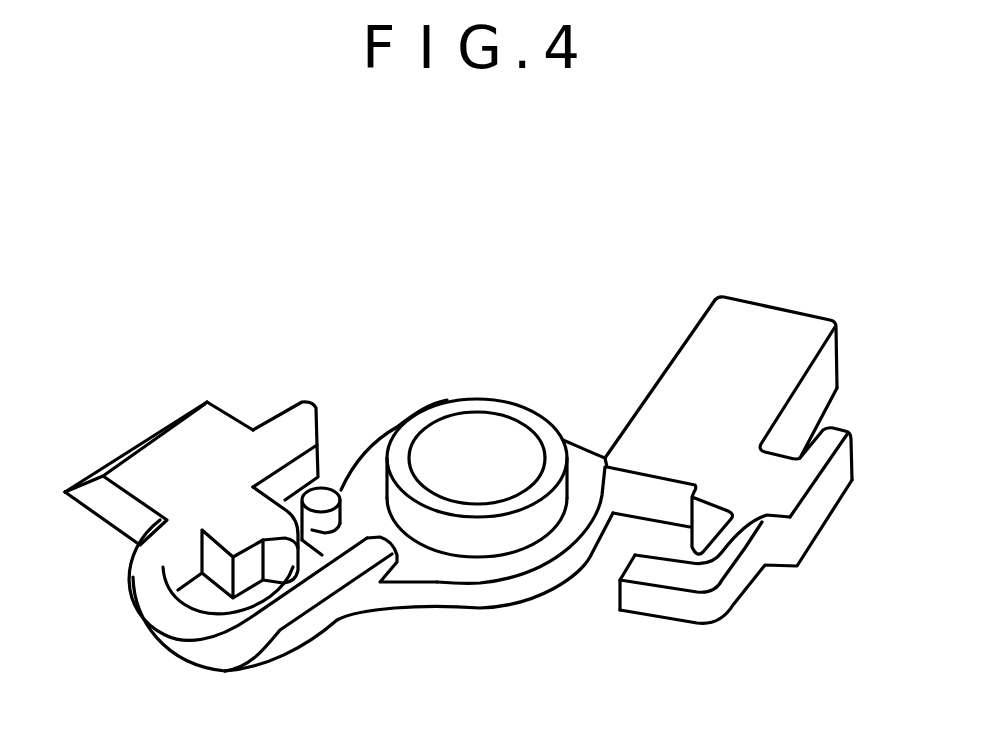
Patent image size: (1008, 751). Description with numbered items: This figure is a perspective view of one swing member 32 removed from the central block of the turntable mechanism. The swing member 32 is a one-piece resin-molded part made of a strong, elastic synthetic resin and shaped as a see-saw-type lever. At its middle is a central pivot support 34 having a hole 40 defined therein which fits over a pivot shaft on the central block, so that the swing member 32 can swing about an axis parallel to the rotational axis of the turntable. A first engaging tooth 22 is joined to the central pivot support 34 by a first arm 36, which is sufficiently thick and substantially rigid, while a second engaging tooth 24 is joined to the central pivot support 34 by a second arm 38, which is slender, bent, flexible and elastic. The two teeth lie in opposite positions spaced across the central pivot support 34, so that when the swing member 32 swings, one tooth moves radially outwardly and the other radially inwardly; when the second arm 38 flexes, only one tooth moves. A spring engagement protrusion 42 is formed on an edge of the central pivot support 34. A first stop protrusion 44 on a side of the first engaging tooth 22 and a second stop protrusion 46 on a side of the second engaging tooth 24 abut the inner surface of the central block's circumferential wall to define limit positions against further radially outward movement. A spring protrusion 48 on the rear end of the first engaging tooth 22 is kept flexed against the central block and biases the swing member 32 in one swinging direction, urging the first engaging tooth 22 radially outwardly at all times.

The swing member 32 is at (592, 258).
The first engaging tooth 22 is at (740, 318).
The second engaging tooth 24 is at (193, 438).
The central pivot support 34 is at (438, 412).
The first arm 36 is at (595, 470).
The second arm 38 is at (277, 643).
The hole 40 is at (497, 445).
The spring engagement protrusion 42 is at (323, 500).
The first stop protrusion 44 is at (828, 445).
The second stop protrusion 46 is at (290, 425).
The spring protrusion 48 is at (657, 603).